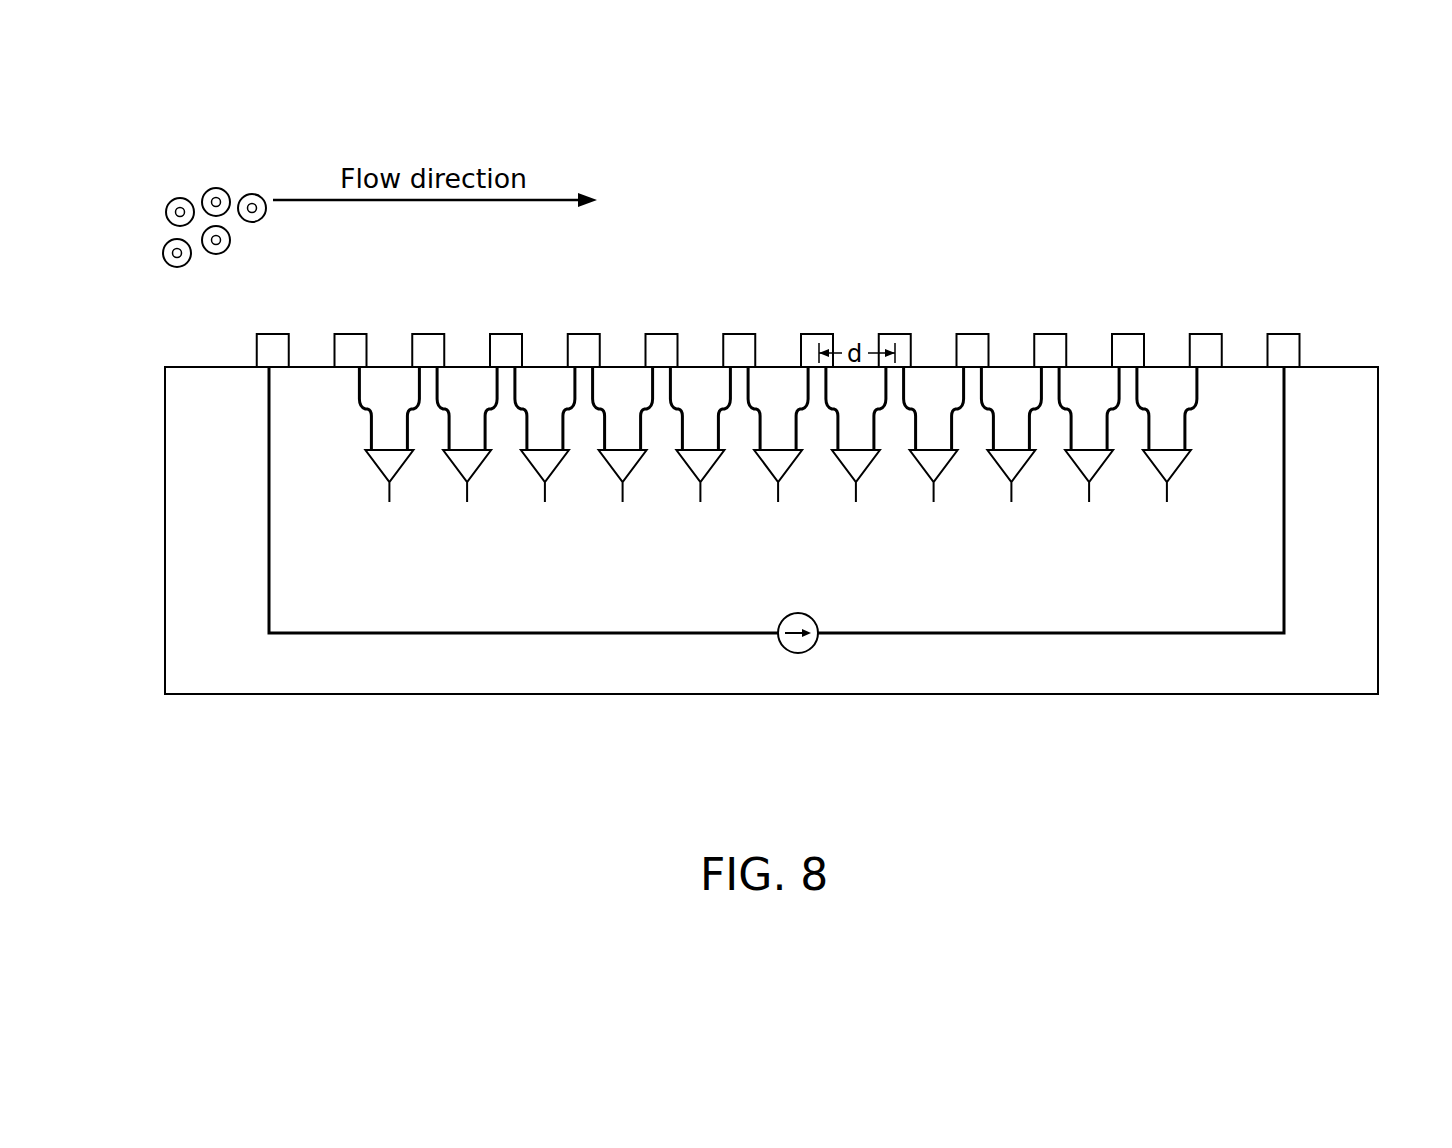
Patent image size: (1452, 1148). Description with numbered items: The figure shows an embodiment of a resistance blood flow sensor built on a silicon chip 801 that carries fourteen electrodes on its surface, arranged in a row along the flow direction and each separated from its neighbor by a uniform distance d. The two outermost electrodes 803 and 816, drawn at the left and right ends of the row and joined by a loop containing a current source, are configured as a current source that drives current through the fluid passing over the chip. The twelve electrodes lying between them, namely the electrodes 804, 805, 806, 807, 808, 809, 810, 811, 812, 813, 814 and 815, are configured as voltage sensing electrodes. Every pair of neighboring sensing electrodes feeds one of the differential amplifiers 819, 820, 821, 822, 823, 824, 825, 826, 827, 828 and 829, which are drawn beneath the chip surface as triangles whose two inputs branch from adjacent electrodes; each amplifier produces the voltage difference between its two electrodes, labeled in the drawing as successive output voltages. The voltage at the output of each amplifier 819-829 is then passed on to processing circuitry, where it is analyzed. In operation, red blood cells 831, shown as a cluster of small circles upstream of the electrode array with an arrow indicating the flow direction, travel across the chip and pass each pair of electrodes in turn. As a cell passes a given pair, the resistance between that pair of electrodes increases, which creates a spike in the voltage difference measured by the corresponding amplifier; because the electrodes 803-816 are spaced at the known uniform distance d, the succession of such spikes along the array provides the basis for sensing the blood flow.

The silicon chip 801 is at (942, 683).
The electrode 803 is at (256, 348).
The electrode 804 is at (334, 334).
The electrode 805 is at (412, 334).
The electrode 806 is at (490, 334).
The electrode 807 is at (568, 334).
The electrode 808 is at (646, 334).
The electrode 809 is at (723, 334).
The electrode 810 is at (801, 334).
The electrode 811 is at (879, 334).
The electrode 812 is at (956, 334).
The electrode 813 is at (1034, 334).
The electrode 814 is at (1112, 334).
The electrode 815 is at (1190, 334).
The electrode 816 is at (1300, 352).
The differential amplifier 819 is at (373, 472).
The differential amplifier 820 is at (451, 472).
The differential amplifier 821 is at (529, 472).
The differential amplifier 822 is at (607, 472).
The differential amplifier 823 is at (684, 472).
The differential amplifier 824 is at (762, 472).
The differential amplifier 825 is at (840, 472).
The differential amplifier 826 is at (918, 472).
The differential amplifier 827 is at (995, 472).
The differential amplifier 828 is at (1073, 472).
The differential amplifier 829 is at (1151, 472).
The red blood cells 831 is at (219, 166).